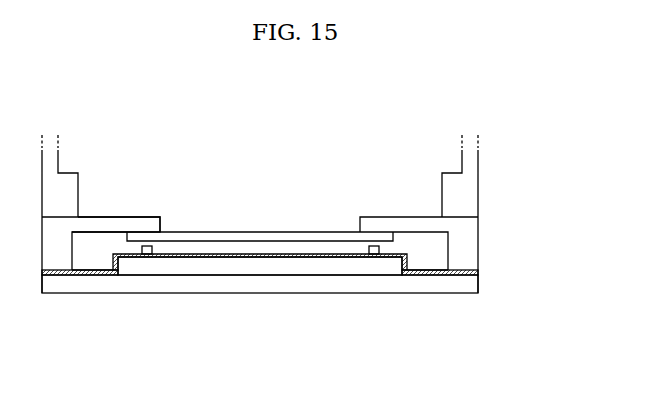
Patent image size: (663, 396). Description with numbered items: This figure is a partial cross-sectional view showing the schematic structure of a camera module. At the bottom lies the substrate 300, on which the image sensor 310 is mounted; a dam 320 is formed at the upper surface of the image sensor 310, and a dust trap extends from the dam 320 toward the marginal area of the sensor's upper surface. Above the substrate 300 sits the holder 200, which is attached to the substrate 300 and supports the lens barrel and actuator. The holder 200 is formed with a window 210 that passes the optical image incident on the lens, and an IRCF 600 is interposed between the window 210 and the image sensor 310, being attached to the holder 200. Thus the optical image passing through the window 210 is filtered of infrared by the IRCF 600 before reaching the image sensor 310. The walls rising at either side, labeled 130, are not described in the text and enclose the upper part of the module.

The frame 130 is at (470, 192).
The holder 200 is at (472, 248).
The window 210 is at (160, 228).
The IRCF 600 is at (257, 232).
The substrate 300 is at (327, 283).
The image sensor 310 is at (242, 272).
The dam 320 is at (148, 256).